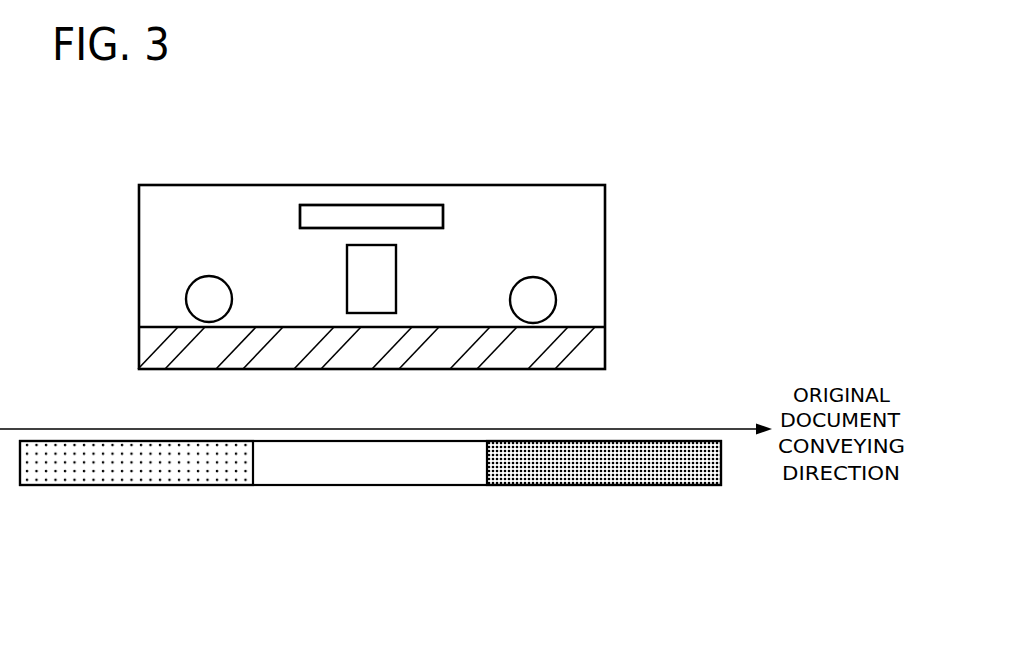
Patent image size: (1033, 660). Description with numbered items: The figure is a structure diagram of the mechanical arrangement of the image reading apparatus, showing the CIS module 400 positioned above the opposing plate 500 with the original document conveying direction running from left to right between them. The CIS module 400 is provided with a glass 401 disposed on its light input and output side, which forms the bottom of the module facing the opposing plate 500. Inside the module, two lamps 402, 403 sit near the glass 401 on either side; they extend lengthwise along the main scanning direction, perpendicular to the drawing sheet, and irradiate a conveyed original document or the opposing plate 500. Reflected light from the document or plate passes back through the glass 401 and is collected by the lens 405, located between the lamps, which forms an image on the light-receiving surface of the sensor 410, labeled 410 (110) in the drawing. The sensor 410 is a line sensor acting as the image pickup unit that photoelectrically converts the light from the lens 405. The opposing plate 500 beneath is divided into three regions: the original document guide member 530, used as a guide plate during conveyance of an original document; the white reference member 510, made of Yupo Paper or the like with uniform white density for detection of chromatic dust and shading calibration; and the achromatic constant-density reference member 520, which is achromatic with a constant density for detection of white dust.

The CIS module 400 is at (555, 185).
The sensor 410 is at (352, 205).
The sensor 110 is at (371, 216).
The lens 405 is at (347, 264).
The lamp 402 is at (187, 292).
The lamp 403 is at (556, 297).
The glass 401 is at (180, 370).
The opposing plate 500 is at (723, 597).
The original document guide member 530 is at (113, 485).
The white reference member 510 is at (363, 485).
The achromatic constant-density reference member 520 is at (608, 513).